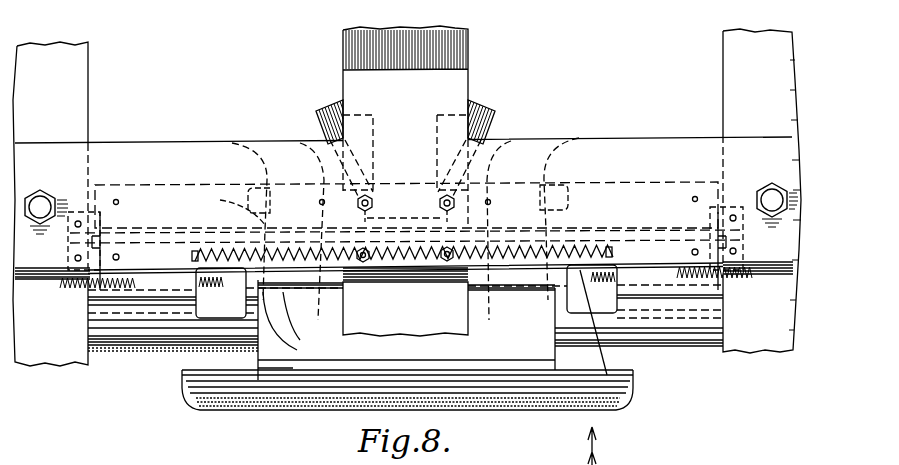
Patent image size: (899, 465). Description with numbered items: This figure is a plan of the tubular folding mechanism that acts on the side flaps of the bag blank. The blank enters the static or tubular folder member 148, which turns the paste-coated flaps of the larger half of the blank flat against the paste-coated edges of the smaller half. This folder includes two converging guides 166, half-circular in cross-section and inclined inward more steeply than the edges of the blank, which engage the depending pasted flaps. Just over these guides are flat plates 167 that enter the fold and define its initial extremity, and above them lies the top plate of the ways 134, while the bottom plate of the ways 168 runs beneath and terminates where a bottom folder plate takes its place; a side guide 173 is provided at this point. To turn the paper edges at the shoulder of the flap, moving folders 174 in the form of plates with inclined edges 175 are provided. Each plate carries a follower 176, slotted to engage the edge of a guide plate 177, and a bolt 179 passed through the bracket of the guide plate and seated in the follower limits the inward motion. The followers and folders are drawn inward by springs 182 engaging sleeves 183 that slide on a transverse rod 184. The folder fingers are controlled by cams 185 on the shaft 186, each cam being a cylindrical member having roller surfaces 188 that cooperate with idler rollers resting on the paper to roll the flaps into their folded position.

The bottom plate of the ways 168 is at (455, 54).
The converging guides 166 is at (317, 124).
The flat plates 167 is at (437, 127).
The static or tubular folder member 148 is at (470, 147).
The side guide 173 is at (260, 163).
The transverse rod 184 is at (137, 235).
The sleeves 183 is at (216, 189).
The top plate of the ways 134 is at (405, 302).
The springs 182 is at (547, 320).
The roller surfaces 188 is at (538, 346).
The inclined edges 175 is at (309, 316).
The moving folders 174 is at (297, 324).
The guide plate 177 is at (293, 364).
The bolt 179 is at (163, 288).
The follower 176 is at (205, 307).
The cams 185 is at (207, 363).
The shaft 186 is at (110, 348).